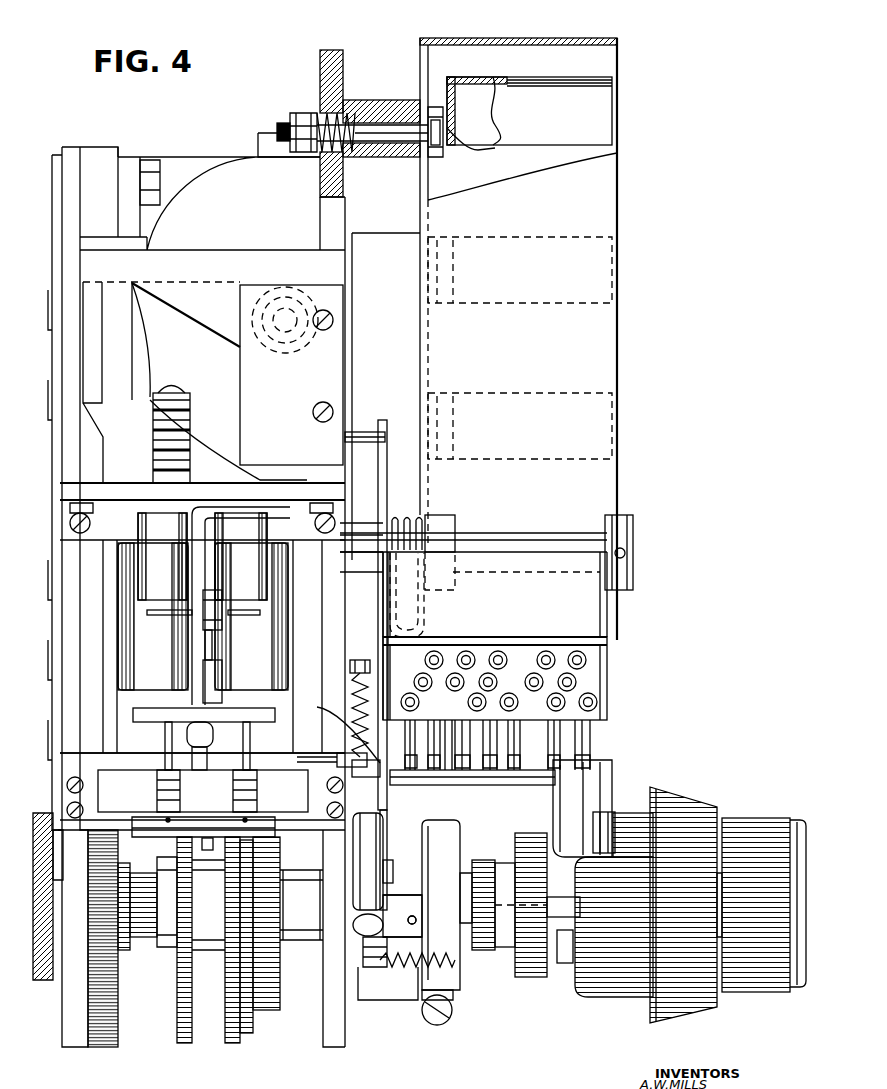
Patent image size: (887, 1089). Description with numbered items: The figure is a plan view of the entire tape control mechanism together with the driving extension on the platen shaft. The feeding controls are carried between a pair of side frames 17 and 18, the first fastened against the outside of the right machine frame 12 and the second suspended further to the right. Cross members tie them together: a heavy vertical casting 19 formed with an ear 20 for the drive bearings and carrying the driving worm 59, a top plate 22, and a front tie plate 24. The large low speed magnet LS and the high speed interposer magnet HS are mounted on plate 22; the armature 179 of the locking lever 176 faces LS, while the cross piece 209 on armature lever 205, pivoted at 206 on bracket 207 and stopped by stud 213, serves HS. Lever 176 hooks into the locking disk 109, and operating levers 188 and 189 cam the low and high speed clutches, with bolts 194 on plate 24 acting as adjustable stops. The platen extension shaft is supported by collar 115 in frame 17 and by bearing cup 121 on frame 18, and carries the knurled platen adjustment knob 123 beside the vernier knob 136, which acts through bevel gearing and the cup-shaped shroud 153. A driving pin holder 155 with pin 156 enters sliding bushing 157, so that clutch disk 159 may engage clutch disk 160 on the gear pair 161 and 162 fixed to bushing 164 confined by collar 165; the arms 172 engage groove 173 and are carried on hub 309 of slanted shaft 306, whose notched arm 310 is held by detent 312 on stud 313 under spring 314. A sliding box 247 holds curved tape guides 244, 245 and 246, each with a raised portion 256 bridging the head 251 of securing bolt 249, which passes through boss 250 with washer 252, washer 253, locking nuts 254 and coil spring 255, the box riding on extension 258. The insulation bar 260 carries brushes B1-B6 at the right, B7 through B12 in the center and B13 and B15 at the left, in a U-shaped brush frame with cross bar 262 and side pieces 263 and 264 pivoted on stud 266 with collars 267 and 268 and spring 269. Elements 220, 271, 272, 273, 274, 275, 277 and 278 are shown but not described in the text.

The right machine frame 12 is at (45, 980).
The side frame 17 is at (77, 1027).
The side frame 18 is at (330, 210).
The vertical casting 19 is at (183, 250).
The ear 20 is at (195, 313).
The plate 22 is at (215, 497).
The front tie plate 24 is at (88, 785).
The driving worm 59 is at (290, 287).
The locking disk 109 is at (207, 850).
The collar 115 is at (105, 1003).
The bearing cup 121 is at (380, 995).
The platen adjustment knob 123 is at (750, 823).
The vernier knob 136 is at (688, 807).
The shroud 153 is at (613, 982).
The driving pin holder 155 is at (567, 958).
The pin 156 is at (510, 873).
The sliding bushing 157 is at (522, 838).
The clutch disk 159 is at (253, 997).
The clutch disk 160 is at (237, 1023).
The gear 161 is at (183, 1003).
The gear 162 is at (227, 1030).
The bushing 164 is at (165, 950).
The collar 165 is at (133, 940).
The arm 172 is at (387, 812).
The groove 173 is at (390, 865).
The locking lever 176 is at (213, 728).
The armature 179 is at (275, 715).
The operating lever 188 is at (165, 740).
The lever 189 is at (250, 742).
The bolt 194 is at (181, 780).
The armature lever 205 is at (212, 645).
The pivot 206 is at (222, 620).
The bracket 207 is at (196, 567).
The cross piece 209 is at (160, 616).
The stop stud 213 is at (222, 672).
The mounting block 220 is at (128, 777).
The curved guide 244 is at (580, 235).
The curved guide 245 is at (580, 392).
The curved guide 246 is at (597, 103).
The sliding box 247 is at (570, 38).
The securing bolt 249 is at (383, 125).
The boss 250 is at (378, 158).
The bolt head 251 is at (437, 155).
The washer 252 is at (432, 158).
The washer 253 is at (302, 113).
The locking nuts 254 is at (283, 123).
The coil spring 255 is at (317, 113).
The raised portion 256 is at (456, 130).
The extension 258 is at (393, 237).
The insulation bar 260 is at (593, 672).
The cross bar 262 is at (478, 560).
The side piece 263 is at (380, 687).
The side piece 264 is at (612, 647).
The stud 266 is at (545, 533).
The collar 267 is at (625, 520).
The collar 268 is at (450, 518).
The spring 269 is at (410, 518).
The bracket 271 is at (340, 765).
The brush bar 272 is at (500, 785).
The link 273 is at (317, 707).
The block 274 is at (607, 828).
The bracket 275 is at (590, 782).
The link bar 277 is at (380, 420).
The pin 278 is at (365, 432).
The slanted shaft 306 is at (360, 950).
The long hub 309 is at (377, 833).
The arm 310 is at (414, 918).
The detent 312 is at (450, 985).
The stud 313 is at (430, 1025).
The spring 314 is at (402, 967).
The low speed control magnet LS is at (153, 616).
The interposer magnet HS is at (251, 601).
The brush B15 is at (408, 730).
The common contact brush B13 is at (437, 730).
The brush B12 is at (447, 770).
The brush B7 is at (512, 732).
The brushes B1-B6 is at (593, 732).